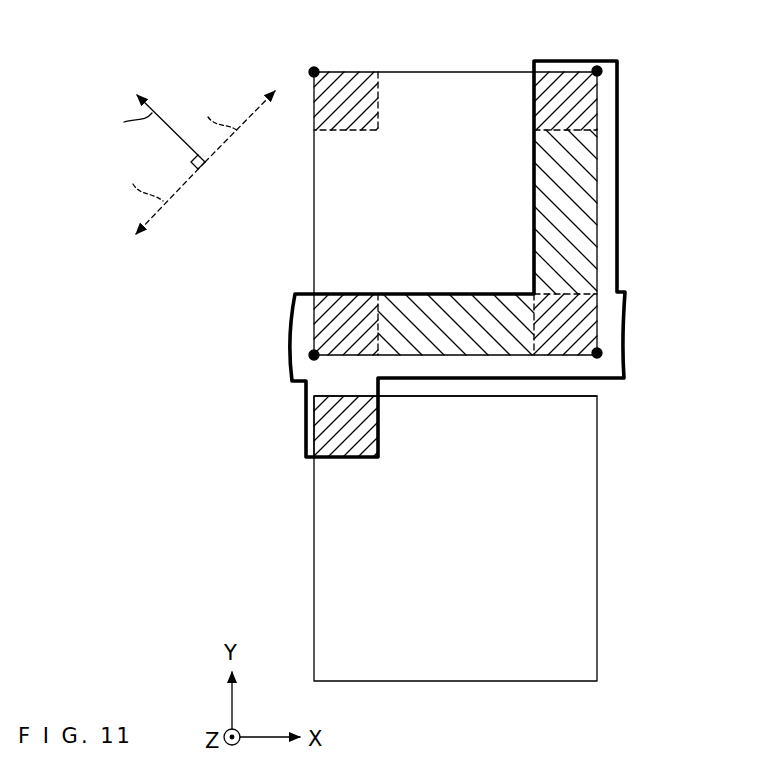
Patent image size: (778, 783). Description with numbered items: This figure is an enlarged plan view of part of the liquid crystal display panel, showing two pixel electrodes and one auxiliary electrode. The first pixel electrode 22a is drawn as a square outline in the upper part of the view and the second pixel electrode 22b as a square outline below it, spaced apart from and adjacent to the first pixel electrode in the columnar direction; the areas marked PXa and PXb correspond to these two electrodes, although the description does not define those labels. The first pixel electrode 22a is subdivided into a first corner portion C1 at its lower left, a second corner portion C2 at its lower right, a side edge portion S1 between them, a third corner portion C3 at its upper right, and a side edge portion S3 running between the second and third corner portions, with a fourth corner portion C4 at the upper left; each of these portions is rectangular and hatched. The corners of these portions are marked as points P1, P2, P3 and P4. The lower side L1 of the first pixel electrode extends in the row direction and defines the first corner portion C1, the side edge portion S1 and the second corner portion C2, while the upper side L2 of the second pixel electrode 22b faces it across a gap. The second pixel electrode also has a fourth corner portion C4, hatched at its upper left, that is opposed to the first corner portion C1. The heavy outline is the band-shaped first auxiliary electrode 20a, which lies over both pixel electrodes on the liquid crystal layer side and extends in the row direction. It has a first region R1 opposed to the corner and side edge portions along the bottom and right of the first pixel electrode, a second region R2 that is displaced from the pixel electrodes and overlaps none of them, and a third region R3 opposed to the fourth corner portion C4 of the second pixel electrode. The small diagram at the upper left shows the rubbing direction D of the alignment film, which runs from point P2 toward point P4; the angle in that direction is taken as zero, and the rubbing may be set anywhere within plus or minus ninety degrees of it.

The first auxiliary electrode 20a is at (617, 381).
The first pixel electrode 22a is at (456, 72).
The second pixel electrode 22b is at (470, 670).
The first pixel PXa is at (308, 225).
The second pixel PXb is at (308, 572).
The first corner portion C1 is at (342, 300).
The second corner portion C2 is at (537, 302).
The third corner portion C3 is at (542, 100).
The fourth corner portion C4 is at (344, 130).
The side edge portion S1 is at (446, 300).
The side edge portion S3 is at (542, 186).
The lower side L1 is at (428, 354).
The upper side L2 is at (484, 392).
The first region R1 is at (603, 332).
The second region R2 is at (604, 366).
The third region R3 is at (312, 422).
The point P1 is at (312, 355).
The point P2 is at (598, 356).
The point P3 is at (597, 69).
The point P4 is at (314, 70).
The rubbing direction D is at (175, 155).